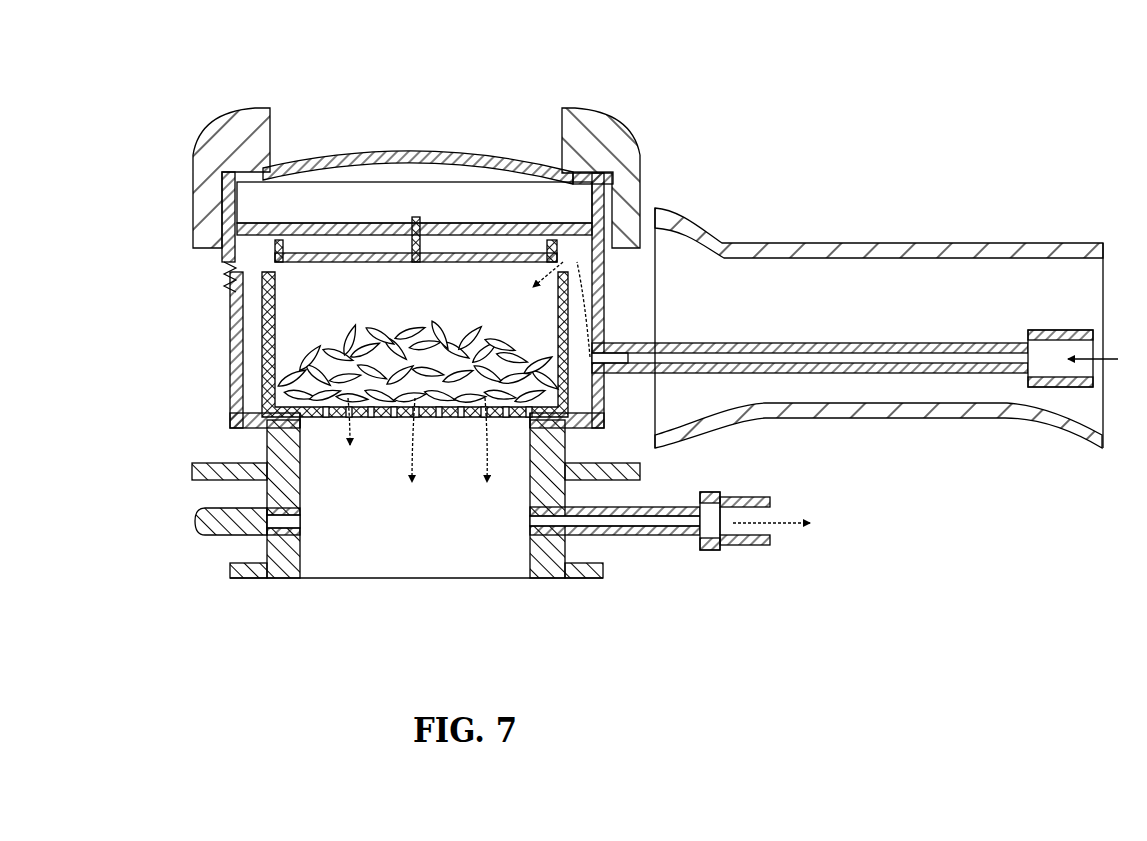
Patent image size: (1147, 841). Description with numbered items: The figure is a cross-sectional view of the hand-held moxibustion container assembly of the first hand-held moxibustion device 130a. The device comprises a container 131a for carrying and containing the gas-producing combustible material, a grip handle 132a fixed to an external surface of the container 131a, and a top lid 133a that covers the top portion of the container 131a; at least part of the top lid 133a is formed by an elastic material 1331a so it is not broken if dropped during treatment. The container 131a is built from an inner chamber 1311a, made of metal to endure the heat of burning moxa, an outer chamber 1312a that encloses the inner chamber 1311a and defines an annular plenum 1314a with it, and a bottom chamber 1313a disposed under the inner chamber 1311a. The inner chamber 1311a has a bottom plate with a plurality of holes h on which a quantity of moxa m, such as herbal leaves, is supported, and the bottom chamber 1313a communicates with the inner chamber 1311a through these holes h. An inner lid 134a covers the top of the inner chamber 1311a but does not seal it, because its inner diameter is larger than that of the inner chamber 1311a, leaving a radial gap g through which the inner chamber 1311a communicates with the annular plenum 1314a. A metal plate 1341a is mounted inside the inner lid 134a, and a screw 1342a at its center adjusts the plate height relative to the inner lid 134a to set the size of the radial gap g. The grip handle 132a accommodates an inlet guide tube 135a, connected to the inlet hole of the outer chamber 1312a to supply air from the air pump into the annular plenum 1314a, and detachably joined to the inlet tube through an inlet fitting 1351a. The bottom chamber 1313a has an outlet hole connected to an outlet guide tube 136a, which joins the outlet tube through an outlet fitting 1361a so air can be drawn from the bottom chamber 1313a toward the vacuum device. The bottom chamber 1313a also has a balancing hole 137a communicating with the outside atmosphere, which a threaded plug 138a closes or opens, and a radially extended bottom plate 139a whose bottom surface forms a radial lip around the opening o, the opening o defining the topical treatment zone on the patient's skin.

The first hand-held moxibustion device 130a is at (801, 47).
The container 131a is at (115, 403).
The inner chamber 1311a is at (262, 310).
The outer chamber 1312a is at (243, 375).
The bottom chamber 1313a is at (238, 428).
The annular plenum 1314a is at (252, 365).
The grip handle 132a is at (862, 248).
The top lid 133a is at (500, 155).
The elastic material 1331a is at (603, 140).
The inner lid 134a is at (537, 221).
The metal plate 1341a is at (560, 258).
The screw 1342a is at (418, 216).
The inlet guide tube 135a is at (885, 400).
The inlet fitting 1351a is at (1060, 387).
The outlet guide tube 136a is at (667, 537).
The outlet fitting 1361a is at (730, 545).
The balancing hole 137a is at (290, 537).
The threaded plug 138a is at (197, 523).
The radially extended bottom plate 139a is at (240, 578).
The radial gap g is at (253, 243).
The holes h is at (540, 427).
The moxa m is at (388, 340).
The opening o is at (415, 578).